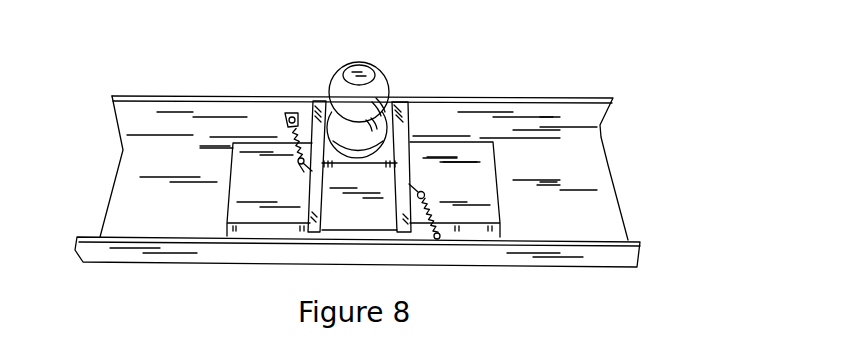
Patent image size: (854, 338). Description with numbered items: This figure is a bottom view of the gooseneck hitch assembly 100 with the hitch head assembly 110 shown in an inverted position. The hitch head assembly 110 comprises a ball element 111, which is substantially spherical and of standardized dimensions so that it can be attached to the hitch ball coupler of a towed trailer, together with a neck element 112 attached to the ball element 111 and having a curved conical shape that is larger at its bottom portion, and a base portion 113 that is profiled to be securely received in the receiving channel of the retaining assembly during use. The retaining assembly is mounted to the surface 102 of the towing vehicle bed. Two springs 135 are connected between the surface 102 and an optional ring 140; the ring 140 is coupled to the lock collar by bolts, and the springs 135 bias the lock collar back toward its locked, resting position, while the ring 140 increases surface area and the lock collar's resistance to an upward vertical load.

The gooseneck hitch assembly 100 is at (443, 85).
The surface 102 is at (600, 203).
The hitch head assembly 110 is at (337, 72).
The ball element 111 is at (385, 78).
The neck element 112 is at (373, 137).
The base portion 113 is at (373, 147).
The spring 135 is at (290, 134).
The ring 140 is at (303, 168).